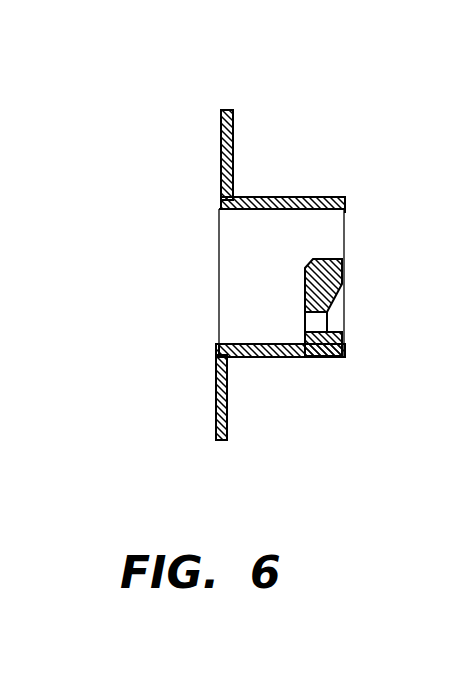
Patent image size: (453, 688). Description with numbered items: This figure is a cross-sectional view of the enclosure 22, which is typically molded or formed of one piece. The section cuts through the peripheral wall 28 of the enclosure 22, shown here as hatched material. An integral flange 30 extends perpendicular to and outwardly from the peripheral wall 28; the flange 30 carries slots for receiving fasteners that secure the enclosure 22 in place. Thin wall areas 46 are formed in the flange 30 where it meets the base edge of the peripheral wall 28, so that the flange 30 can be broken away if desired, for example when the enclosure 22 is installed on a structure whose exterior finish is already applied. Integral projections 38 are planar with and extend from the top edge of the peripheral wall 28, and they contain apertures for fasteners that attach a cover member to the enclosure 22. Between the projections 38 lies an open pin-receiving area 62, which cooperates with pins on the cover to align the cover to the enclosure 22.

The enclosure 22 is at (312, 122).
The peripheral wall 28 is at (279, 199).
The flange 30 is at (220, 143).
The integral projections 38 is at (345, 279).
The thin wall areas 46 is at (220, 194).
The pin-receiving area 62 is at (328, 234).